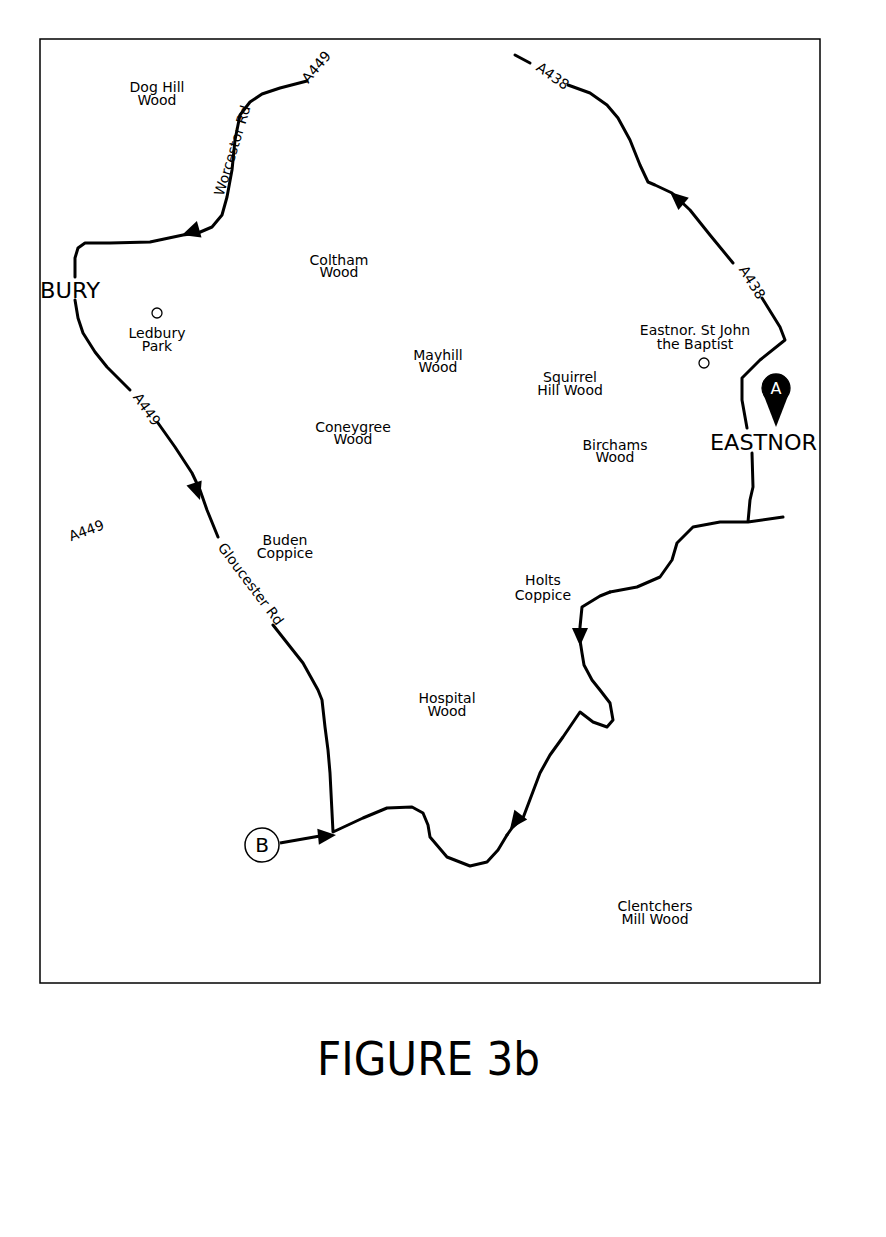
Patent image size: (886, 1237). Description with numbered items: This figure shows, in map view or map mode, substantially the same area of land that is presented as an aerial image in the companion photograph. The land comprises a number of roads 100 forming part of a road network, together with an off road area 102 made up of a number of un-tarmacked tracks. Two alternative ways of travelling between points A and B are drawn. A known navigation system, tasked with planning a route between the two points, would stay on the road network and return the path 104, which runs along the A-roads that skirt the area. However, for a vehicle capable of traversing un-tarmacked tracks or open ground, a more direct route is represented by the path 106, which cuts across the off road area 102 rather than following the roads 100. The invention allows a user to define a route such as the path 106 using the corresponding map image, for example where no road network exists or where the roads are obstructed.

The roads 100 is at (328, 905).
The off road area 102 is at (592, 806).
The path 104 is at (176, 447).
The path 106 is at (592, 639).